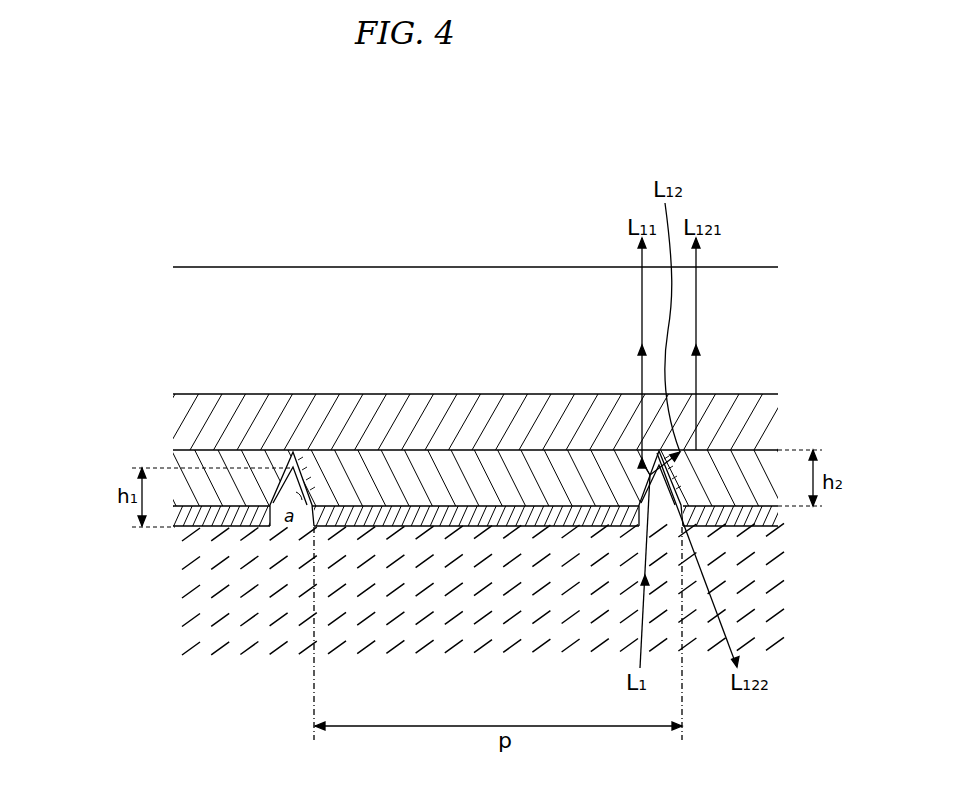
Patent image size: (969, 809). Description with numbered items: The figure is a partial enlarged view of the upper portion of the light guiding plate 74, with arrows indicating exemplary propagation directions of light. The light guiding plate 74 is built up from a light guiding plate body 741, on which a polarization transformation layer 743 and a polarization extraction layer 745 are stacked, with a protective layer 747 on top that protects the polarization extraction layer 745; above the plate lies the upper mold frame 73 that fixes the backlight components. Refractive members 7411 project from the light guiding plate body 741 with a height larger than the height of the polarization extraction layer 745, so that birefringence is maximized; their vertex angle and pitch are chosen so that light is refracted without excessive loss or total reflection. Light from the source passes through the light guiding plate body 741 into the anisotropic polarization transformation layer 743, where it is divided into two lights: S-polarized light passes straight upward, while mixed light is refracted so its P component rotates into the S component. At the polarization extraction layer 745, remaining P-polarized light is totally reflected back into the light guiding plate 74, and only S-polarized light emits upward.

The upper mold frame 73 is at (757, 322).
The light guiding plate 74 is at (110, 542).
The light guiding plate body 741 is at (518, 438).
The refractive member 7411 is at (305, 477).
The polarization transformation layer 743 is at (762, 513).
The polarization extraction layer 745 is at (193, 462).
The protective layer 747 is at (757, 418).